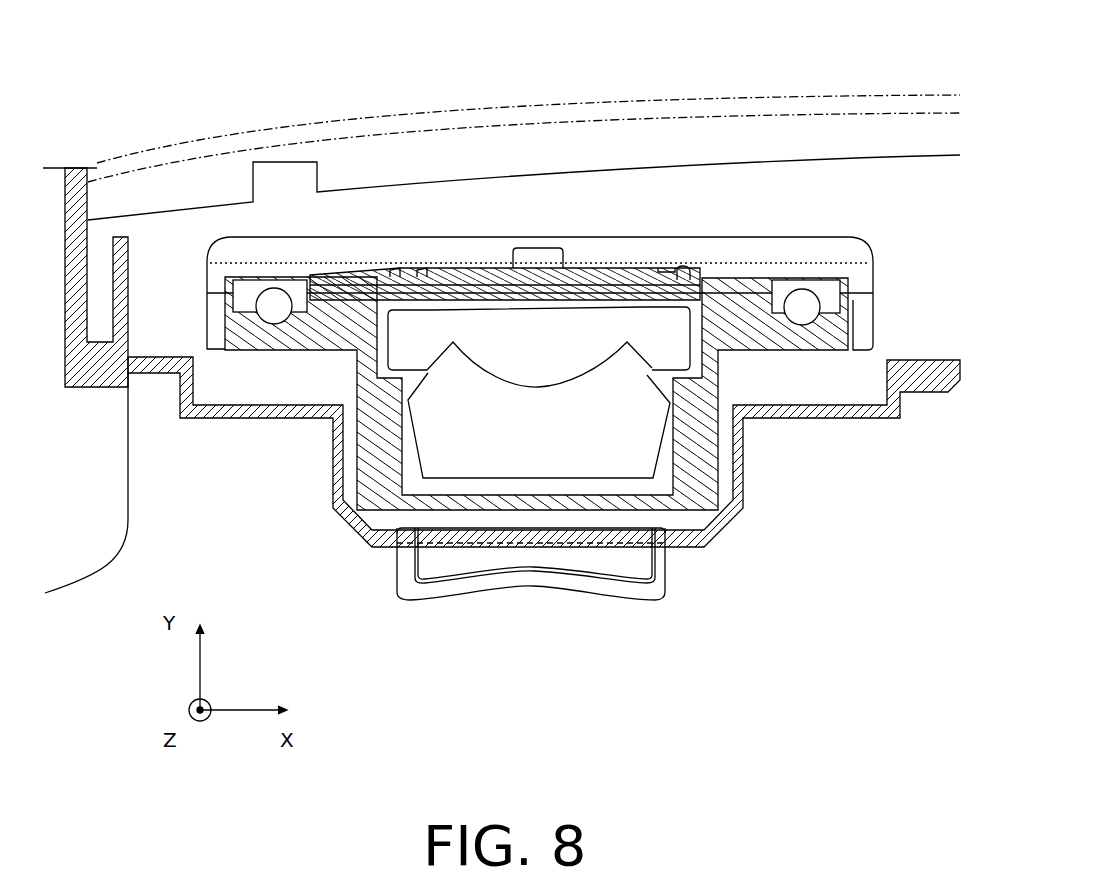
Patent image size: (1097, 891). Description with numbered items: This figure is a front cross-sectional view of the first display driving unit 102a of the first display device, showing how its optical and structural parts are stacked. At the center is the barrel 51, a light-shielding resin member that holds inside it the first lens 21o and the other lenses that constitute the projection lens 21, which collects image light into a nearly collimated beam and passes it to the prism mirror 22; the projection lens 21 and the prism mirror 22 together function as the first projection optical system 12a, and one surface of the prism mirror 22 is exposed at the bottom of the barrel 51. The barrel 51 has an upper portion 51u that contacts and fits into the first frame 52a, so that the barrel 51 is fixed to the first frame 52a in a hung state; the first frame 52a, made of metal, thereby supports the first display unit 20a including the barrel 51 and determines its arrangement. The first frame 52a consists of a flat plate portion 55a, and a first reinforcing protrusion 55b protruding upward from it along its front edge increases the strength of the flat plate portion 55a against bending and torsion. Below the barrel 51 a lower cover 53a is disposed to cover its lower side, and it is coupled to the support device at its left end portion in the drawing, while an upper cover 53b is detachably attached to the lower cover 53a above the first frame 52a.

The first display driving unit 102a is at (233, 103).
The upper cover 53b is at (488, 100).
The lower cover 53a is at (355, 190).
The flat plate portion 55a is at (410, 277).
The first reinforcing protrusion 55b is at (477, 248).
The first frame 52a is at (660, 230).
The upper portion 51u is at (679, 268).
The barrel 51 is at (551, 428).
The first projection optical system 12a is at (803, 267).
The first display unit 20a is at (346, 549).
The projection lens 21 is at (598, 452).
The first lens 21o is at (633, 458).
The prism mirror 22 is at (623, 567).